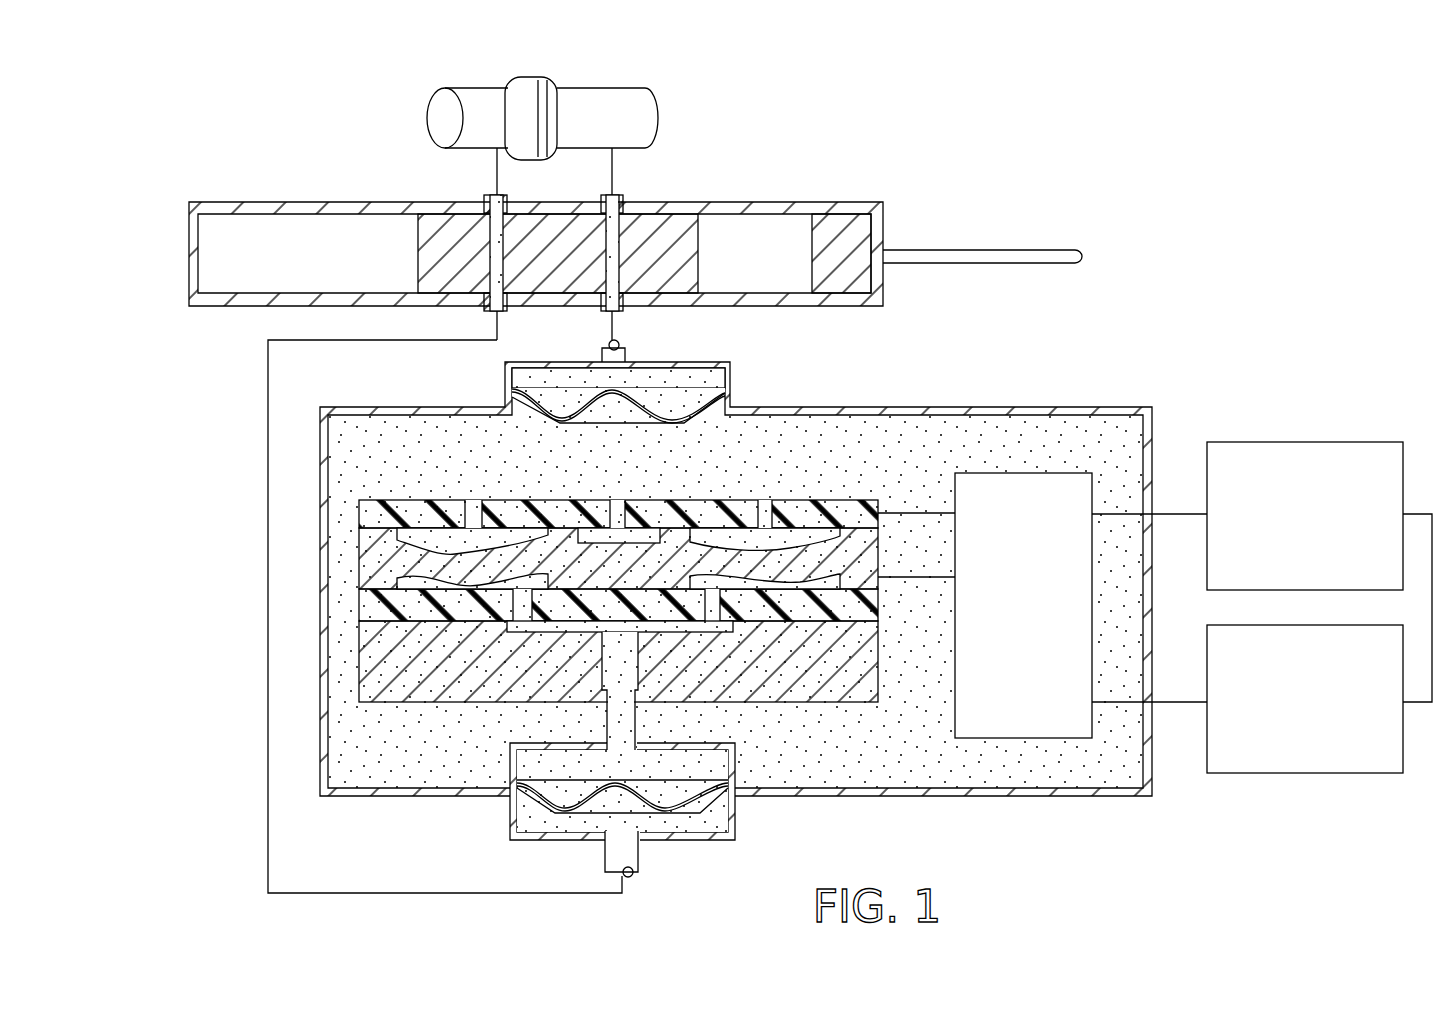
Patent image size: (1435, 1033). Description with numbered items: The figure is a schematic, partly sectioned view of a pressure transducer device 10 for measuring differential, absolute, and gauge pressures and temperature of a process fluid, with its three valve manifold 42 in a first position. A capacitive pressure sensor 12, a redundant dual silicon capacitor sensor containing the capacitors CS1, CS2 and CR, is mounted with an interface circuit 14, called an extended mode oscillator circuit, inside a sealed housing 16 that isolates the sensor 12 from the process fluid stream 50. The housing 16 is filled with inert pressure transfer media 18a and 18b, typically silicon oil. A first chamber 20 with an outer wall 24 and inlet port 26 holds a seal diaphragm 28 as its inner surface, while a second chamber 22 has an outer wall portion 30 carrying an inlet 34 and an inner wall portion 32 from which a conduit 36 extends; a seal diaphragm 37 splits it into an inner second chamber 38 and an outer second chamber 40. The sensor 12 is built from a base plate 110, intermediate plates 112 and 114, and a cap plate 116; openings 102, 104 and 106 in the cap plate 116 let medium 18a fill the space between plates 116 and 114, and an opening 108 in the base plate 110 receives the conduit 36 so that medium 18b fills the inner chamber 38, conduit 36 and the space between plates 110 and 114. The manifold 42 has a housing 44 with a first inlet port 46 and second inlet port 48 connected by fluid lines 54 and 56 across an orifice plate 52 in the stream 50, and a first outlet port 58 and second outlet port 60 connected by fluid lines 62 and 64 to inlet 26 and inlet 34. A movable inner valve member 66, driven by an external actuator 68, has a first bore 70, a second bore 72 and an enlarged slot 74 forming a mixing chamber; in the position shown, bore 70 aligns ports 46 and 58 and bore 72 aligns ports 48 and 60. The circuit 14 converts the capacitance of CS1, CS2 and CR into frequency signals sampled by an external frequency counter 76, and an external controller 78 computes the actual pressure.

The pressure transducer device 10 is at (1208, 356).
The capacitive pressure sensor 12 is at (648, 643).
The interface circuit 14 is at (1018, 725).
The sealed housing 16 is at (955, 407).
The pressure transfer medium 18a is at (1060, 440).
The pressure transfer medium 18b is at (517, 770).
The first chamber 20 is at (671, 370).
The second chamber 22 is at (591, 824).
The outer wall 24 is at (712, 363).
The inlet port 26 is at (600, 357).
The seal diaphragm 28 is at (738, 399).
The outer wall portion 30 is at (510, 838).
The inner wall portion 32 is at (545, 775).
The inlet 34 is at (606, 855).
The conduit 36 is at (637, 752).
The seal diaphragm 37 is at (622, 808).
The inner second chamber 38 is at (596, 778).
The outer second chamber 40 is at (632, 825).
The three valve manifold 42 is at (874, 180).
The manifold housing 44 is at (735, 204).
The first inlet port 46 is at (620, 196).
The second inlet port 48 is at (488, 197).
The process fluid stream 50 is at (630, 78).
The orifice plate 52 is at (528, 78).
The fluid line 54 is at (612, 164).
The fluid line 56 is at (497, 174).
The first outlet port 58 is at (624, 309).
The second outlet port 60 is at (488, 309).
The fluid line 62 is at (622, 345).
The fluid line 64 is at (418, 616).
The inner valve member 66 is at (845, 230).
The external actuator 68 is at (912, 251).
The first bore 70 is at (614, 250).
The second bore 72 is at (475, 270).
The enlarged slot 74 is at (776, 271).
The frequency counter 76 is at (1275, 442).
The external controller 78 is at (1308, 757).
The opening 102 is at (473, 500).
The opening 104 is at (618, 500).
The opening 106 is at (768, 500).
The opening 108 is at (635, 665).
The base plate 110 is at (870, 690).
The intermediate plate 112 is at (878, 605).
The intermediate plate 114 is at (878, 553).
The cap plate 116 is at (876, 505).
The sensing capacitor CS1 is at (440, 555).
The reference capacitor CR is at (600, 548).
The sensing capacitor CS2 is at (745, 542).